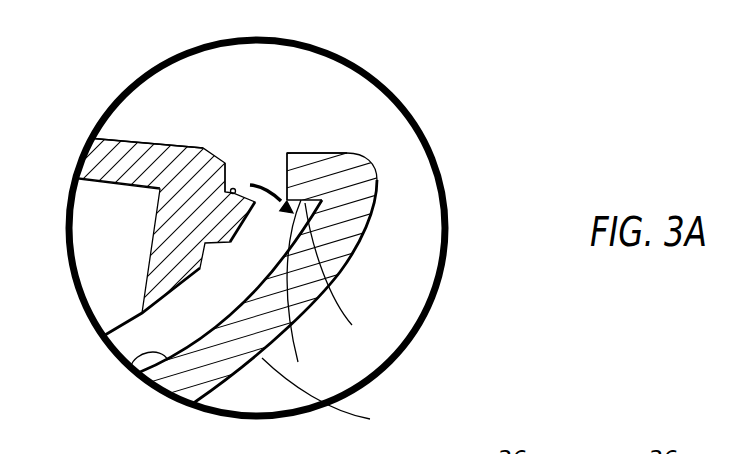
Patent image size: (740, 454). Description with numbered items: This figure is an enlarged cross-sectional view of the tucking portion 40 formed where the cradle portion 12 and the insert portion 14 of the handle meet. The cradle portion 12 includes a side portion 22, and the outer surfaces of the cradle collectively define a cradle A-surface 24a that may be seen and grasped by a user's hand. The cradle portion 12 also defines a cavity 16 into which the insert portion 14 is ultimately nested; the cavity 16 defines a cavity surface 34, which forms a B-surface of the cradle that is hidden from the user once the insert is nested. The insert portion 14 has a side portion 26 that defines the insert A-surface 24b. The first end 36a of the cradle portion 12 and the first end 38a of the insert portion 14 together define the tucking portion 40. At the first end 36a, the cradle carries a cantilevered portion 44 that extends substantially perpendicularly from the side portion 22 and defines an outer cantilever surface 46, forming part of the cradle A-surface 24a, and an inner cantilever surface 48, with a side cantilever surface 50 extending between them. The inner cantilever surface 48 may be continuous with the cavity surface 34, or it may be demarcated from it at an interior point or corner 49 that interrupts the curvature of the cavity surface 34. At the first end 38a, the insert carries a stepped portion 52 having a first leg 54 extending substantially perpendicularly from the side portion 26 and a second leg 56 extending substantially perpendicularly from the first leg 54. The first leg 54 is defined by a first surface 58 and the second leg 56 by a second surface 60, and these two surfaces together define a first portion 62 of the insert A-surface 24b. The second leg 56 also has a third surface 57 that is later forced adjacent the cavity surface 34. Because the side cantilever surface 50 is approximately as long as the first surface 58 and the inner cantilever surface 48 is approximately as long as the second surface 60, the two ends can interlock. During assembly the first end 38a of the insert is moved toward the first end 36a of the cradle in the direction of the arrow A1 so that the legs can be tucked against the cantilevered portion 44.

The cradle portion 12 is at (318, 323).
The insert portion 14 is at (170, 128).
The cavity 16 is at (201, 327).
The side portion 22 is at (338, 220).
The cradle A-surface 24a is at (333, 395).
The insert A-surface 24b is at (148, 140).
The side portion 26 is at (120, 152).
The cavity surface 34 is at (131, 366).
The first end 36a is at (283, 128).
The first end 38a is at (229, 128).
The tucking portion 40 is at (298, 78).
The cantilevered portion 44 is at (357, 143).
The outer cantilever surface 46 is at (323, 153).
The inner cantilever surface 48 is at (322, 285).
The interior point or corner 49 is at (313, 222).
The side cantilever surface 50 is at (287, 163).
The stepped portion 52 is at (247, 180).
The first leg 54 is at (188, 185).
The second leg 56 is at (160, 240).
The third surface 57 is at (298, 362).
The first surface 58 is at (227, 174).
The second surface 60 is at (233, 197).
The first portion of the insert A-surface 62 is at (267, 163).
The arrow A1 is at (271, 211).